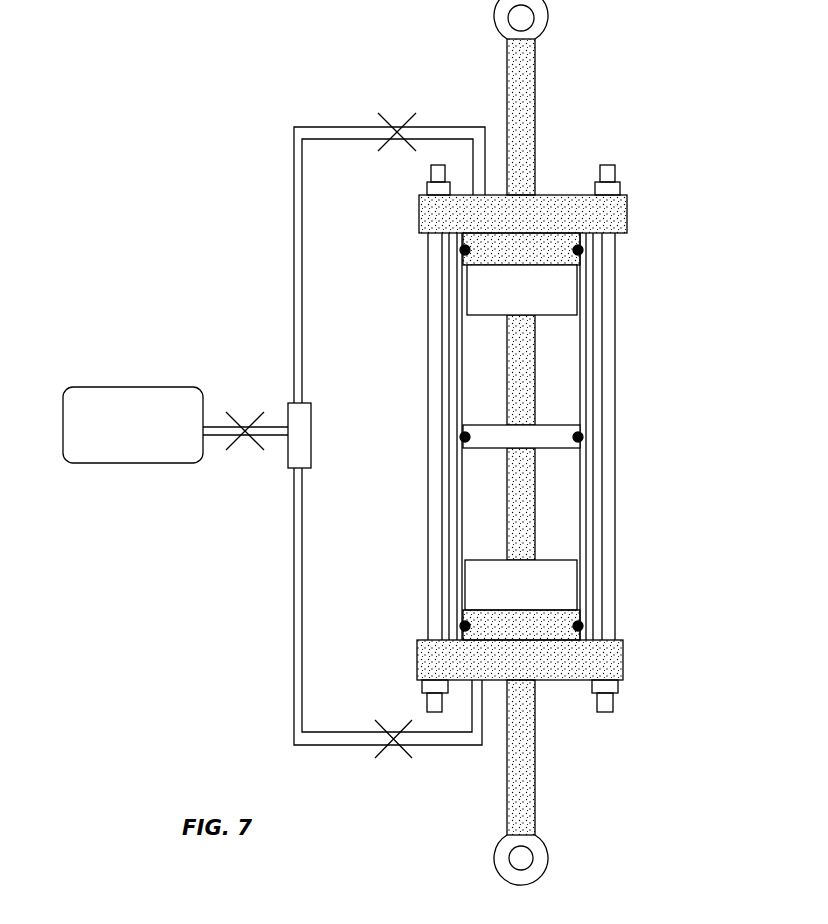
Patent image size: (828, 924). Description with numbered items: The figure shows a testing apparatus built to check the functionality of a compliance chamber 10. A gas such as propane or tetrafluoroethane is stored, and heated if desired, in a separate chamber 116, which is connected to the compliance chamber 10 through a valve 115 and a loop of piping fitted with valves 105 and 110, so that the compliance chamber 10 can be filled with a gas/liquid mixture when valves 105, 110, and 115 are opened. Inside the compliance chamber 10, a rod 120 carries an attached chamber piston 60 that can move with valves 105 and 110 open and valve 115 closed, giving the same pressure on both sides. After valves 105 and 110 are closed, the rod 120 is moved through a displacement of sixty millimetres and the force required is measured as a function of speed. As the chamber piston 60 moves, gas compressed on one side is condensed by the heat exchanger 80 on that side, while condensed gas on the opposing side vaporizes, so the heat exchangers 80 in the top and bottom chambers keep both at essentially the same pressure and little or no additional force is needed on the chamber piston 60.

The compliance chamber 10 is at (623, 128).
The chamber piston 60 is at (565, 425).
The heat exchanger 80 is at (555, 585).
The valve 105 is at (395, 118).
The valve 110 is at (393, 722).
The valve 115 is at (247, 420).
The chamber 116 is at (90, 387).
The rod 120 is at (530, 108).